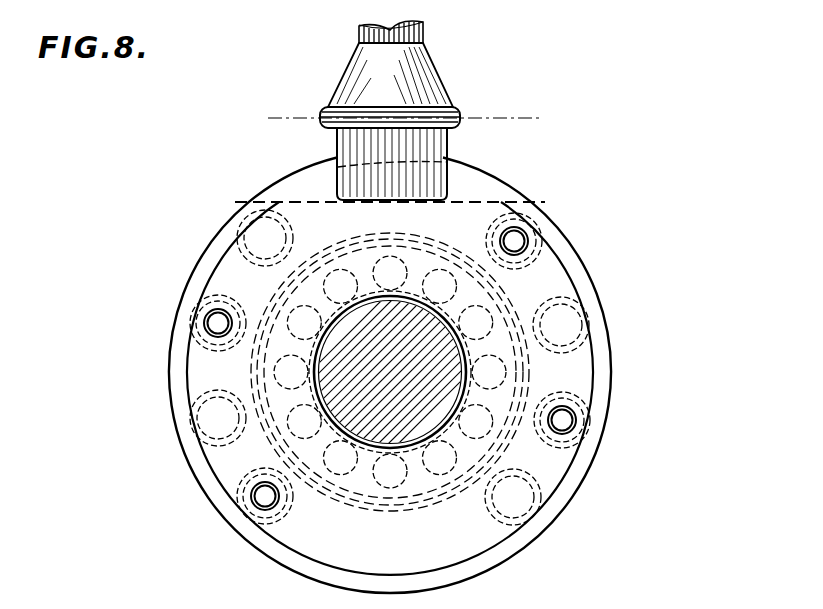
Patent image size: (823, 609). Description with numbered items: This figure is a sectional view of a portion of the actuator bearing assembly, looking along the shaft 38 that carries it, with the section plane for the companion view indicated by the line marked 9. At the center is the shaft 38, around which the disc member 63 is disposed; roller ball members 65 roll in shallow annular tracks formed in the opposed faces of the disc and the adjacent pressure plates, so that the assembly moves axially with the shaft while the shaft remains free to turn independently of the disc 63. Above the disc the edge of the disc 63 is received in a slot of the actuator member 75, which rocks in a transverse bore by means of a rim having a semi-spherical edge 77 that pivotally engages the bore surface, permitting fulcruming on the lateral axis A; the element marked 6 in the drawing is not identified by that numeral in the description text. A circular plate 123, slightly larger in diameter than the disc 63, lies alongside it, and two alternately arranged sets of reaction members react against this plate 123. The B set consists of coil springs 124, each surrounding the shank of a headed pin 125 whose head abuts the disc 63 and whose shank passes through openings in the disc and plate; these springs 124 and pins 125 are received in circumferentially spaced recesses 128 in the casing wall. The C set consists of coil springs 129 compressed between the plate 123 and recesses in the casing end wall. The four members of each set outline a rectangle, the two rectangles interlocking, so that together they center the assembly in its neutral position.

The fitting 6 is at (404, 110).
The section line 9- 9 is at (390, 372).
The shaft 38 is at (378, 422).
The disc member 63 is at (560, 278).
The roller ball members 65 is at (401, 473).
The actuator member 75 is at (428, 70).
The semi-spherical edge 77 is at (456, 122).
The circular plate 123 is at (600, 352).
The coil springs 124 is at (205, 300).
The headed pin 125 is at (206, 332).
The recesses 128 is at (260, 602).
The coil springs 129 is at (248, 218).